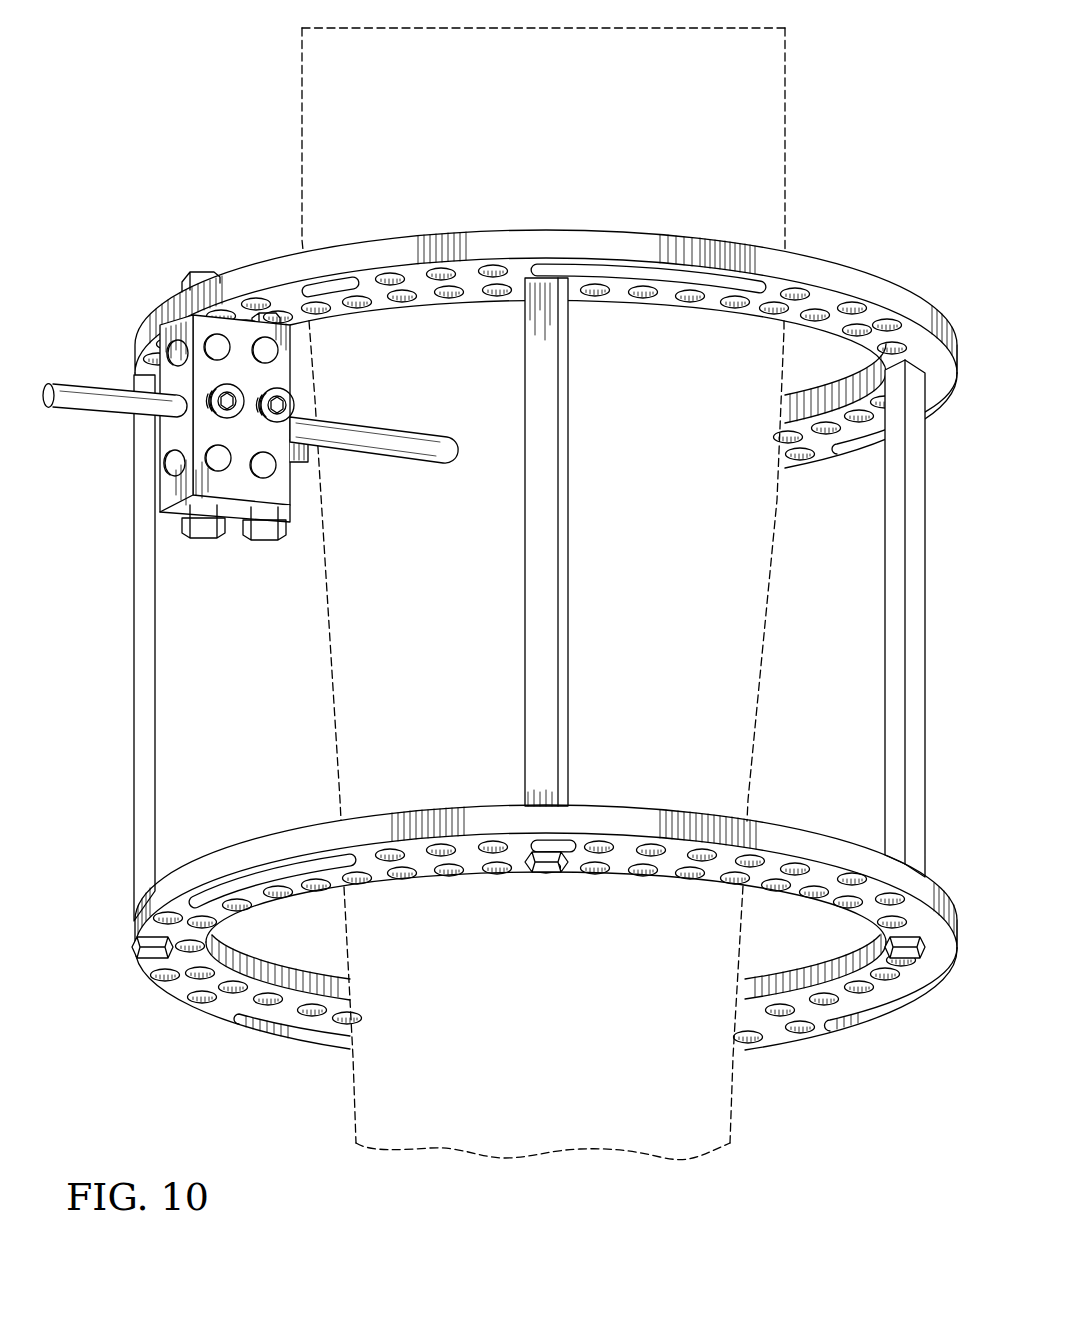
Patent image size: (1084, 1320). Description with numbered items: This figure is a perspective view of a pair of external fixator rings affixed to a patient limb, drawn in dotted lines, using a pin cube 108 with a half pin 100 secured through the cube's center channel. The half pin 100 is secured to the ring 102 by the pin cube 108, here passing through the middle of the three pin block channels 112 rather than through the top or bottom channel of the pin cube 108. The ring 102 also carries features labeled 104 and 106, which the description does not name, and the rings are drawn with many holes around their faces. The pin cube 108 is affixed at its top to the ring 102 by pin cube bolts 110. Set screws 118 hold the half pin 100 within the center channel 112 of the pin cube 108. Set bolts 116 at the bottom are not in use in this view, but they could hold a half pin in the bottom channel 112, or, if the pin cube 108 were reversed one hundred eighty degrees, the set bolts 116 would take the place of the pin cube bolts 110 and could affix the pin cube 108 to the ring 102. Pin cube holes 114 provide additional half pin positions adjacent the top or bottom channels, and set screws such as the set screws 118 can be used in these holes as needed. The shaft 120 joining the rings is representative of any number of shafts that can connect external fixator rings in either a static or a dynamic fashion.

The half pin 100 is at (414, 469).
The ring 102 is at (858, 268).
The apertures 104 is at (893, 362).
The slot 106 is at (726, 274).
The pin cube 108 is at (178, 495).
The pin cube bolts 110 is at (197, 270).
The pin block channels 112 is at (176, 350).
The pin cube holes 114 is at (280, 352).
The set bolts 116 is at (205, 540).
The set screws 118 is at (291, 405).
The shaft 120 is at (570, 590).